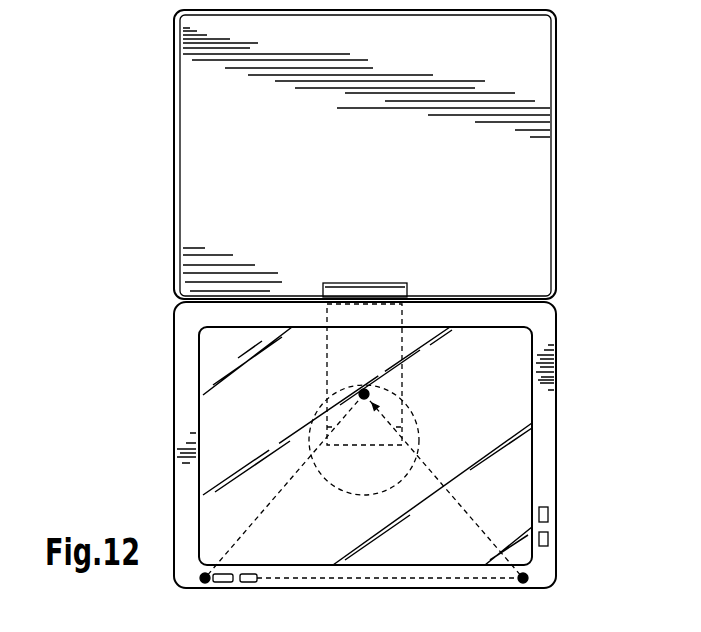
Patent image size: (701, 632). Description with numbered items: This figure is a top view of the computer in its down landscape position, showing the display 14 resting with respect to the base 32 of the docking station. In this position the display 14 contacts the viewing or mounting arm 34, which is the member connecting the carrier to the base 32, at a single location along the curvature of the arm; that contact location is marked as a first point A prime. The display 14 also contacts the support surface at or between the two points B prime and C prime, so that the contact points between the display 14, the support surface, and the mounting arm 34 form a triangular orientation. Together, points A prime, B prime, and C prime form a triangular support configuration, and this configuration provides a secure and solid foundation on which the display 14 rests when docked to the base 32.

The display 14 is at (543, 473).
The base 32 is at (500, 209).
The mounting arm 34 is at (405, 424).